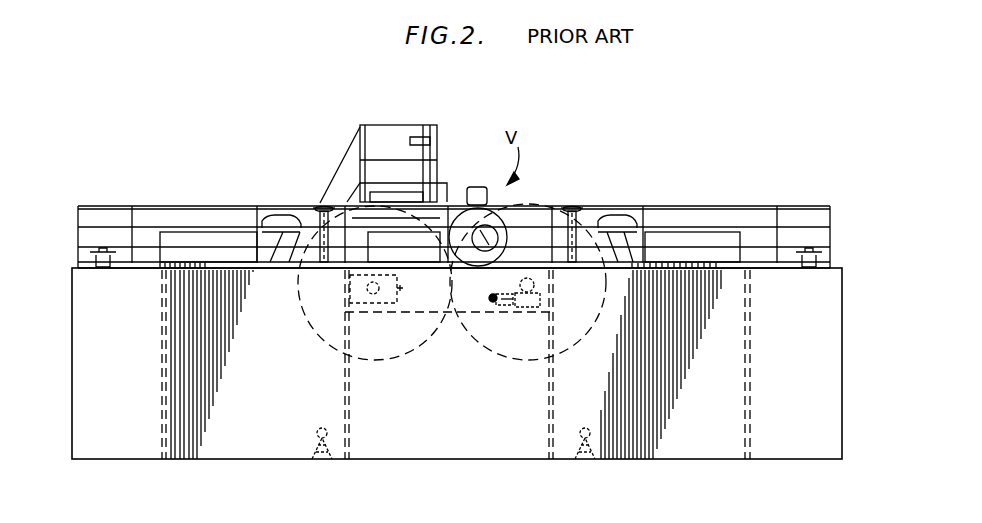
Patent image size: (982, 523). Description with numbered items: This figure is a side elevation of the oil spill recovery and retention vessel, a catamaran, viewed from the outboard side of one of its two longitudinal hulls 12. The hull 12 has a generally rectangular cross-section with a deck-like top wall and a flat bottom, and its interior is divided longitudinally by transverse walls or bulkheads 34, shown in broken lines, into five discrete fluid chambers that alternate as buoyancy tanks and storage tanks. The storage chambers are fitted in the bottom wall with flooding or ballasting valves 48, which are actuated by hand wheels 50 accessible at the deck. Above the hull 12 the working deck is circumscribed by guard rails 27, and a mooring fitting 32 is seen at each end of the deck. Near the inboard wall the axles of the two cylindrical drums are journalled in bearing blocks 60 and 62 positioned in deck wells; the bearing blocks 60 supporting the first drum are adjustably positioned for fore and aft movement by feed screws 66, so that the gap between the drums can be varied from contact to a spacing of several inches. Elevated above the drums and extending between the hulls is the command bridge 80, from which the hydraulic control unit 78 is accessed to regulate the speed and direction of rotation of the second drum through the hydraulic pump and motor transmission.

The longitudinal hull 12 is at (465, 466).
The guard rails 27 is at (695, 206).
The mooring bitt 32 is at (92, 262).
The transverse walls or bulkheads 34 is at (350, 402).
The flooding or ballasting valves 48 is at (318, 448).
The hand wheels 50 is at (318, 207).
The bearing blocks 60 is at (528, 282).
The bearing blocks 62 is at (375, 283).
The feed screws 66 is at (492, 317).
The hydraulic control unit 78 is at (432, 128).
The command bridge 80 is at (393, 187).